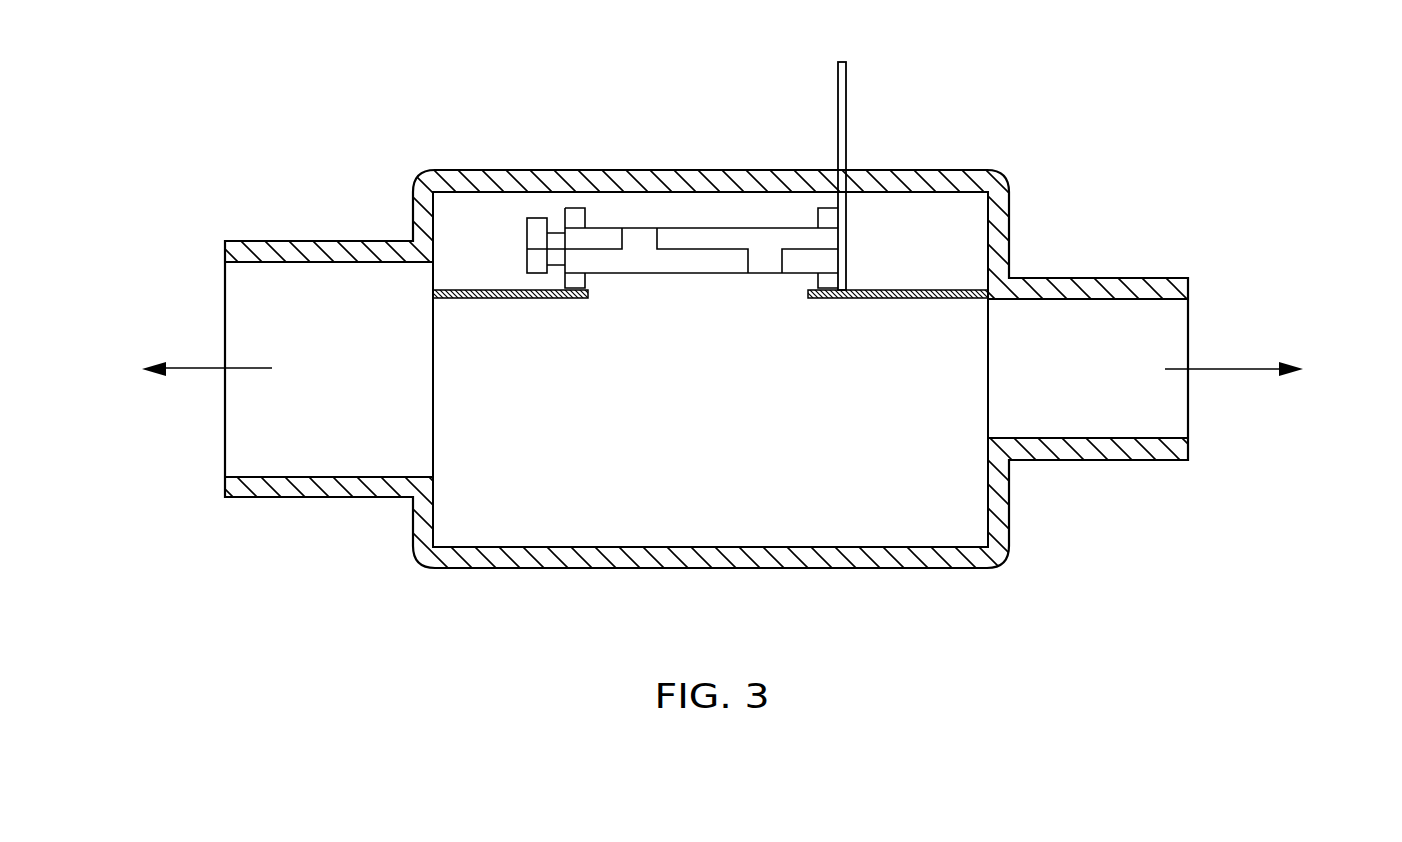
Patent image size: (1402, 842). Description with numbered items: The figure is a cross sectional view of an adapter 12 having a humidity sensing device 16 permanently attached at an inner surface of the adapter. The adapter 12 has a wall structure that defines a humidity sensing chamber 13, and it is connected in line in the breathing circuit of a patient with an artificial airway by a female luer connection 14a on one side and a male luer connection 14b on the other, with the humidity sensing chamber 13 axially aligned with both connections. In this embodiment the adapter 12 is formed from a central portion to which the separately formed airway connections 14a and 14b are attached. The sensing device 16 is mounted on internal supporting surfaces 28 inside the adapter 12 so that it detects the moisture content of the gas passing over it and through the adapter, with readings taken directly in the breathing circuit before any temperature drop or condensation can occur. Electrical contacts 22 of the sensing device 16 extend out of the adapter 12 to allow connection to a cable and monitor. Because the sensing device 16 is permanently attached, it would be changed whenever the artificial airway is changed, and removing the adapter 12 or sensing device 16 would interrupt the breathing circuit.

The adapter 12 is at (528, 569).
The humidity sensing chamber 13 is at (795, 525).
The female luer connection 14a is at (273, 465).
The male luer connection 14b is at (1108, 320).
The sensing device 16 is at (682, 257).
The electrical contacts 22 is at (847, 80).
The internal supporting surfaces 28 is at (498, 300).